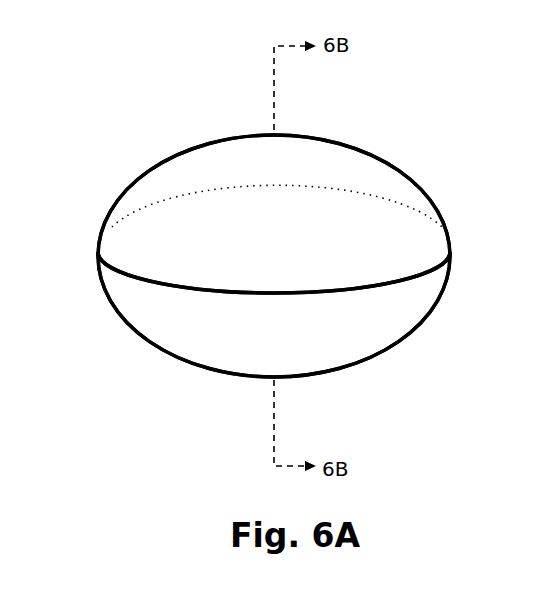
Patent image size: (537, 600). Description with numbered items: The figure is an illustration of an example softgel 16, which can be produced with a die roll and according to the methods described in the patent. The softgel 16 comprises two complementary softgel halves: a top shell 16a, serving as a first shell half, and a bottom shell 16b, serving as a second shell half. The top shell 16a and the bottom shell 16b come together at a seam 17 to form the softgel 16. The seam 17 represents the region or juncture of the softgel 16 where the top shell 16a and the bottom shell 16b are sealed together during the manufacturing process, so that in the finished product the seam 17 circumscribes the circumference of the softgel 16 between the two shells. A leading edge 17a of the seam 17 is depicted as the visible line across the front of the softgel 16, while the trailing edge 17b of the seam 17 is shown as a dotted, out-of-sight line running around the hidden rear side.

The softgel 16 is at (147, 172).
The top shell 16a is at (354, 178).
The bottom shell 16b is at (378, 313).
The seam 17 is at (142, 273).
The leading edge 17a is at (258, 295).
The trailing edge 17b is at (272, 185).